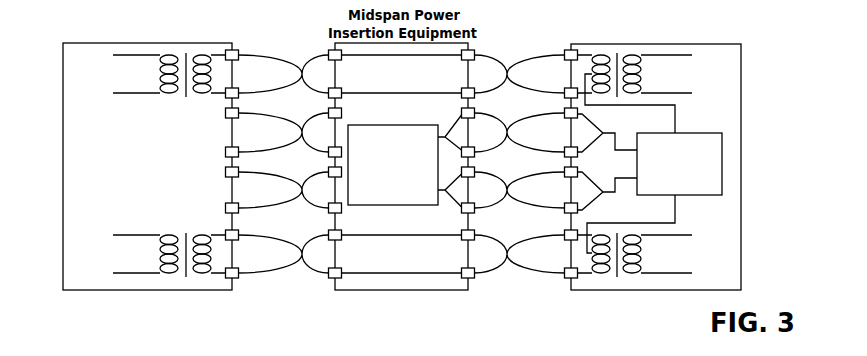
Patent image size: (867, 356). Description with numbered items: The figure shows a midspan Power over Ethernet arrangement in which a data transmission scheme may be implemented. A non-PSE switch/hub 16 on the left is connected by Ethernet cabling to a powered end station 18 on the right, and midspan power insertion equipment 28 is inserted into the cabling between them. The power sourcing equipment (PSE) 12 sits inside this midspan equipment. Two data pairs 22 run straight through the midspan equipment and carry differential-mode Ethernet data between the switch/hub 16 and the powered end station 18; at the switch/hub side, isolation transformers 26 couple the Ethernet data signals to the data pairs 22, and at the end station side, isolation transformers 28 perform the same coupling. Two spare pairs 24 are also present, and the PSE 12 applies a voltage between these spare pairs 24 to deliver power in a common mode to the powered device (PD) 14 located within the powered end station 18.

The power sourcing equipment (PSE) 12 is at (377, 124).
The powered device (PD) 14 is at (690, 133).
The switch/hub 16 is at (193, 42).
The powered end station 18 is at (743, 70).
The data pairs 22 is at (263, 53).
The spare pairs 24 is at (258, 113).
The isolation transformers 26 is at (196, 99).
The isolation transformers 28 is at (468, 43).